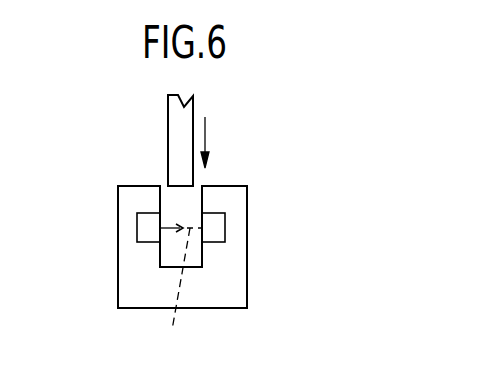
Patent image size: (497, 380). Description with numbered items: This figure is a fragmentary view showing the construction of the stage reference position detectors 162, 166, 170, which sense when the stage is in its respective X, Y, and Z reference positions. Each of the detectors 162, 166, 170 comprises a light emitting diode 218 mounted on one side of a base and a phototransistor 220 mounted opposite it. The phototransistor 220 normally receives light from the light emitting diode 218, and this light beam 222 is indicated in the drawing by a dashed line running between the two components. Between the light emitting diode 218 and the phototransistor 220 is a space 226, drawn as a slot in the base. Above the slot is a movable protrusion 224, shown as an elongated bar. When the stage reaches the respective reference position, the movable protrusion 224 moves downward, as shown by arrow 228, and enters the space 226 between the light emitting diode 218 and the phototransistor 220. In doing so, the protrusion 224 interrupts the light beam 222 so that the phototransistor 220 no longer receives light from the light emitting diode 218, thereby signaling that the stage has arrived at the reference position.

The detector 162 is at (228, 167).
The detector 166 is at (382, 172).
The detector 170 is at (433, 172).
The movable protrusion 224 is at (168, 128).
The arrow 228 is at (205, 130).
The space 226 is at (180, 203).
The light emitting diode 218 is at (143, 227).
The phototransistor 220 is at (217, 227).
The light beam 222 is at (169, 291).